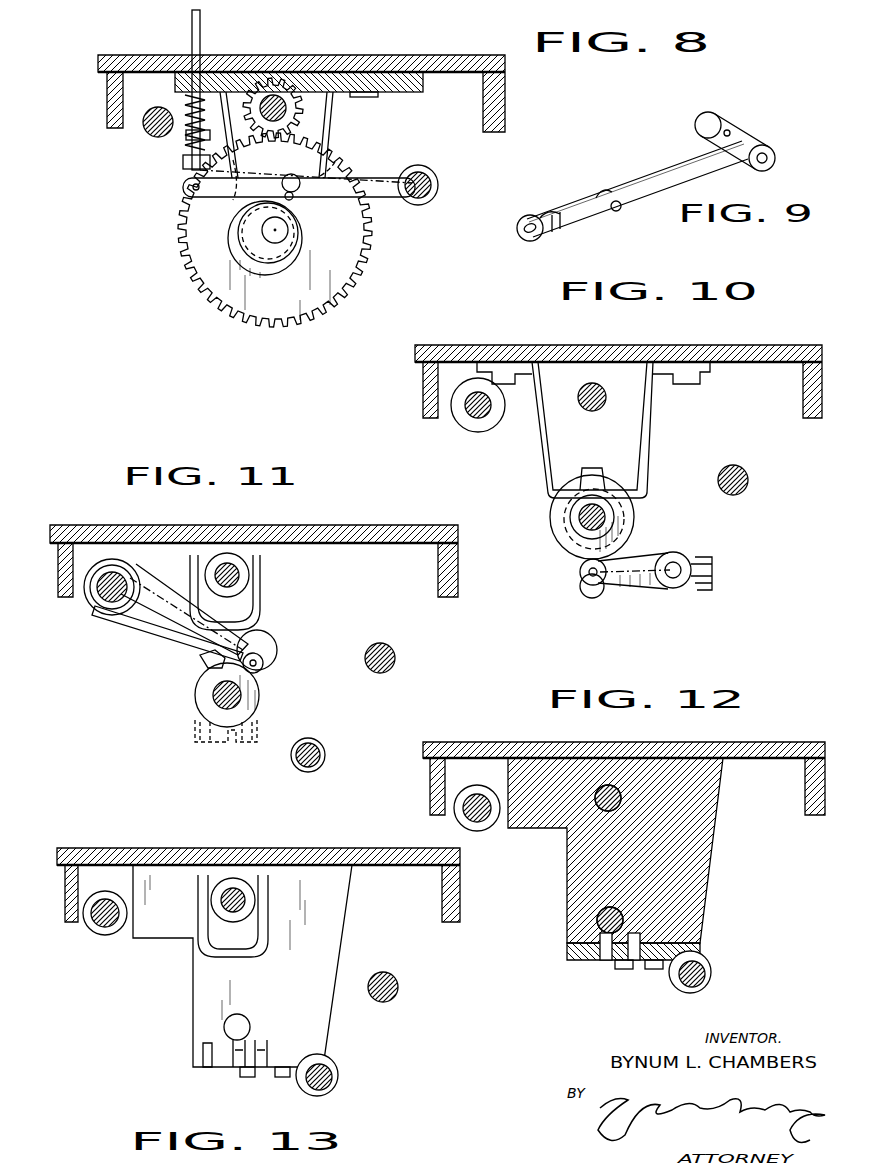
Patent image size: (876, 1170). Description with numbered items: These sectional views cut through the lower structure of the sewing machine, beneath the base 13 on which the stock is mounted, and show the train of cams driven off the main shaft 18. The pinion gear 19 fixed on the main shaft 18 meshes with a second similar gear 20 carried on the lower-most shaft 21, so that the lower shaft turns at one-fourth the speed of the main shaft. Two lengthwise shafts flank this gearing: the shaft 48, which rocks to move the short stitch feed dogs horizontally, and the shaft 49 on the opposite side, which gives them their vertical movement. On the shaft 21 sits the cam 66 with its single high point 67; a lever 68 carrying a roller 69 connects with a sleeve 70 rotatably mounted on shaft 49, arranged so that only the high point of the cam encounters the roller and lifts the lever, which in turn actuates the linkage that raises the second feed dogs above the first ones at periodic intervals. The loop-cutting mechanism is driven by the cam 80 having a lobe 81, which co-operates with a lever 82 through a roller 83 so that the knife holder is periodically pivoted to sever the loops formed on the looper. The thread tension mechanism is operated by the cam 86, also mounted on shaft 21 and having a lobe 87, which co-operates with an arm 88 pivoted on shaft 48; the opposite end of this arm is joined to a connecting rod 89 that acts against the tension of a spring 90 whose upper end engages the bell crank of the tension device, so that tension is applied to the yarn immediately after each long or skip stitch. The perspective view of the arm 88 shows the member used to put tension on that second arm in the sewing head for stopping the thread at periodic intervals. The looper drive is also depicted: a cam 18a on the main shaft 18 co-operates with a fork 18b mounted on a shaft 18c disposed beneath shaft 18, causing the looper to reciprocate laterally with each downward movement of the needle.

In FIG. 8, the base 13 is at (413, 56).
In FIG. 10, the base 13 is at (583, 346).
In FIG. 11, the base 13 is at (350, 526).
In FIG. 12, the base 13 is at (530, 742).
In FIG. 13, the base 13 is at (340, 850).
In FIG. 10, the main shaft 18 is at (605, 400).
In FIG. 11, the main shaft 18 is at (240, 577).
In FIG. 12, the main shaft 18 is at (618, 790).
In FIG. 13, the main shaft 18 is at (246, 902).
In FIG. 11, the cam 18a is at (230, 560).
In FIG. 13, the cam 18a is at (236, 884).
In FIG. 11, the fork 18b is at (260, 603).
In FIG. 13, the fork 18b is at (200, 902).
In FIG. 13, the shaft 18c is at (240, 1028).
In FIG. 8, the pinion gear 19 is at (298, 108).
In FIG. 8, the gear 20 is at (355, 270).
In FIG. 8, the shaft 21 is at (280, 230).
In FIG. 10, the shaft 21 is at (600, 515).
In FIG. 11, the shaft 21 is at (240, 695).
In FIG. 12, the shaft 21 is at (606, 962).
In FIG. 8, the shaft 48 is at (439, 185).
In FIG. 10, the shaft 48 is at (744, 490).
In FIG. 11, the shaft 48 is at (396, 657).
In FIG. 13, the shaft 48 is at (400, 988).
In FIG. 8, the shaft 49 is at (145, 130).
In FIG. 10, the shaft 49 is at (477, 414).
In FIG. 11, the shaft 49 is at (102, 597).
In FIG. 12, the shaft 49 is at (478, 818).
In FIG. 13, the shaft 49 is at (100, 925).
In FIG. 11, the cam 66 is at (205, 700).
In FIG. 11, the high point 67 is at (200, 660).
In FIG. 11, the lever 68 is at (152, 624).
In FIG. 11, the roller 69 is at (264, 664).
In FIG. 11, the sleeve 70 is at (136, 568).
In FIG. 10, the cam 80 is at (563, 538).
In FIG. 10, the lobe 81 is at (603, 468).
In FIG. 10, the lever 82 is at (650, 583).
In FIG. 10, the roller 83 is at (585, 578).
In FIG. 8, the cam 86 is at (243, 240).
In FIG. 8, the lobe 87 is at (256, 264).
In FIG. 8, the arm 88 is at (385, 178).
In FIG. 9, the arm 88 is at (652, 182).
In FIG. 8, the connecting rod 89 is at (200, 36).
In FIG. 8, the spring 90 is at (187, 128).